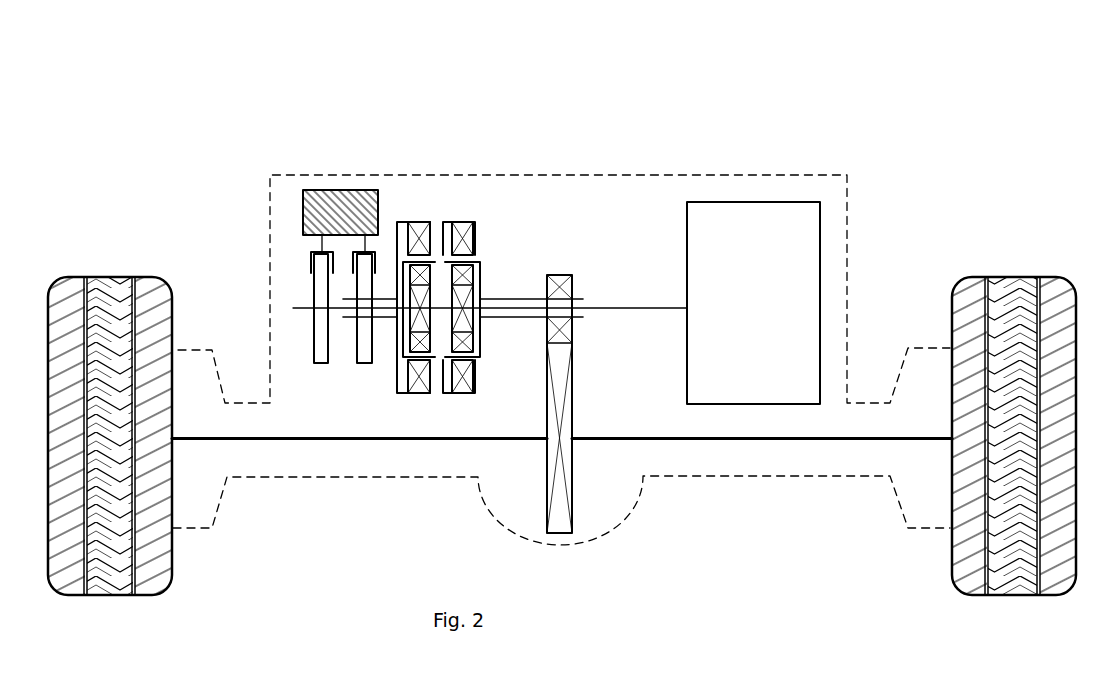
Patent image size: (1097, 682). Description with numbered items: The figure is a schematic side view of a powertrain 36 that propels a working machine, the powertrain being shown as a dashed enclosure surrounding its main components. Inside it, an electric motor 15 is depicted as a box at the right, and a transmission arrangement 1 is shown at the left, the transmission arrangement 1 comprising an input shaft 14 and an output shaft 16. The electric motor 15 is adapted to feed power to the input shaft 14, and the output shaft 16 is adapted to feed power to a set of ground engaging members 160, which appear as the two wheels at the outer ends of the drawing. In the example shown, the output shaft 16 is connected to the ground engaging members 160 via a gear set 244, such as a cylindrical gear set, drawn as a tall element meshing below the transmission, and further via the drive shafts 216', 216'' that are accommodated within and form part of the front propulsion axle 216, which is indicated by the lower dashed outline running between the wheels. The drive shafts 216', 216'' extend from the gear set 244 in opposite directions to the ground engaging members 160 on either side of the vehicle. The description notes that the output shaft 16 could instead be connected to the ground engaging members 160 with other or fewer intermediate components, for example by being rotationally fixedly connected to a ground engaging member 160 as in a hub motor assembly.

The transmission arrangement 1 is at (443, 195).
The input shaft 14 is at (613, 307).
The electric motor 15 is at (802, 252).
The output shaft 16 is at (502, 298).
The powertrain 36 is at (718, 162).
The ground engaging members 160 is at (155, 550).
The propulsion axle 216 is at (561, 541).
The drive shaft 216' is at (359, 493).
The drive shaft 216'' is at (762, 523).
The gear set 244 is at (529, 414).